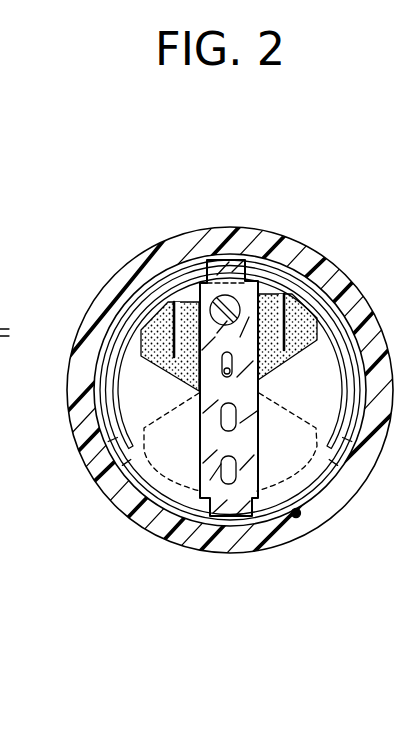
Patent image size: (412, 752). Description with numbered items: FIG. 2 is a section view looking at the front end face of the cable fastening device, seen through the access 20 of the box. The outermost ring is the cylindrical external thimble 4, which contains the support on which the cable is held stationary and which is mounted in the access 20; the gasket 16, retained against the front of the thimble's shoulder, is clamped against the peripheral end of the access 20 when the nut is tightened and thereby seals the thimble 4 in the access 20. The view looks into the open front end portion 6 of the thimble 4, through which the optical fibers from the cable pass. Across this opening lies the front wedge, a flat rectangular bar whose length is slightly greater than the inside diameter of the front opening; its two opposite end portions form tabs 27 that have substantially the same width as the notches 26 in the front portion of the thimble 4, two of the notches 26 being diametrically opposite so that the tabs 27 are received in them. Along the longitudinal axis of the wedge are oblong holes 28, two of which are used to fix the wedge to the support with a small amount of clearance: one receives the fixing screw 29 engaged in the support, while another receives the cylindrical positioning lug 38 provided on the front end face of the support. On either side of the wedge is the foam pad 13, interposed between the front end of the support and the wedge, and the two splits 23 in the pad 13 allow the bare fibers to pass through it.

The access 20 is at (326, 501).
The external thimble 4 is at (296, 514).
The gasket 16 is at (160, 508).
The notches 26 is at (124, 502).
The oblong holes 28 is at (203, 430).
The splits 23 is at (175, 332).
The foam pad 13 is at (298, 330).
The front end portion 6 is at (198, 514).
The tabs 27 is at (216, 294).
The fixing screw 29 is at (238, 300).
The cylindrical positioning lug 38 is at (230, 372).